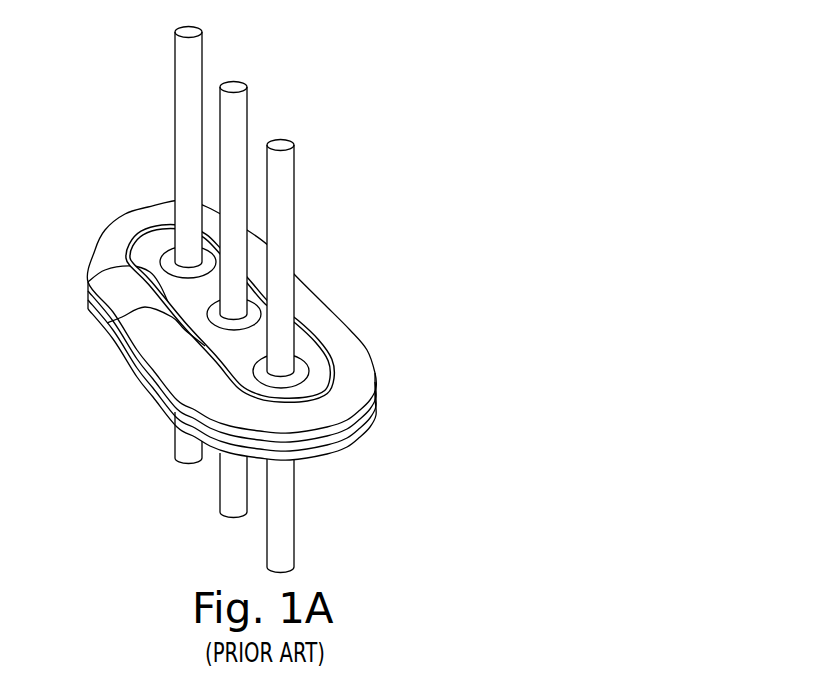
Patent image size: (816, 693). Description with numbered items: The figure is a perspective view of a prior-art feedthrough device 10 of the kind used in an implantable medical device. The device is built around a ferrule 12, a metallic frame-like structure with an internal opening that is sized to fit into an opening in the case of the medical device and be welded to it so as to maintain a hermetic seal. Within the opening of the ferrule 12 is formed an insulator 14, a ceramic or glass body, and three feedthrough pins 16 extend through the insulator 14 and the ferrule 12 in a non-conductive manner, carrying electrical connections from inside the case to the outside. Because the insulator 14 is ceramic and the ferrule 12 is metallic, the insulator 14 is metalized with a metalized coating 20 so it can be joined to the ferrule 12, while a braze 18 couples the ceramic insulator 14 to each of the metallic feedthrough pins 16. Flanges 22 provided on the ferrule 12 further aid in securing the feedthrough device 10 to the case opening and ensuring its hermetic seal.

The feedthrough device 10 is at (421, 103).
The ferrule 12 is at (359, 369).
The insulator 14 is at (87, 282).
The feedthrough pins 16 is at (196, 48).
The braze 18 is at (170, 253).
The metalized coating 20 is at (107, 323).
The flanges 22 is at (340, 420).